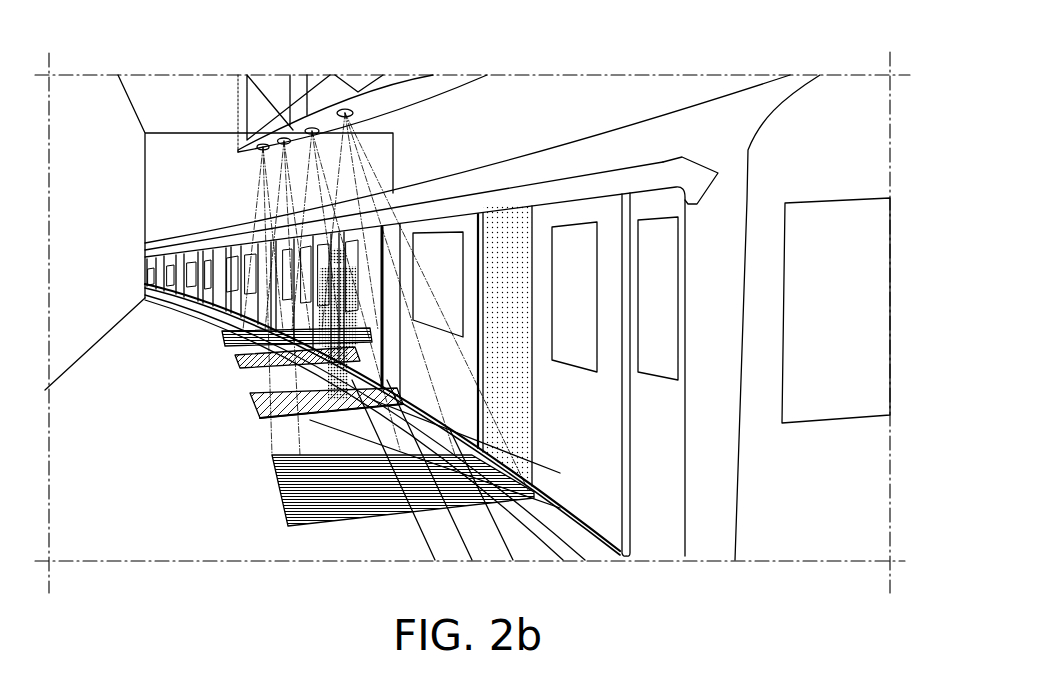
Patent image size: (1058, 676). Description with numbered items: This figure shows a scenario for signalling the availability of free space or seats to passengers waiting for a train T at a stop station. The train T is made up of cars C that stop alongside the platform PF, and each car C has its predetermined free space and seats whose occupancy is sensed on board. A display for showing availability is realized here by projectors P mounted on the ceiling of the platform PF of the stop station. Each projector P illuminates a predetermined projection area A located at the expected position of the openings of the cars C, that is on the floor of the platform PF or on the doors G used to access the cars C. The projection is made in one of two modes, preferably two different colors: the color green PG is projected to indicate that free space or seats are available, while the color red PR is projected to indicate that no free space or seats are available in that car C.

The passenger transport train T is at (196, 231).
The car C is at (701, 126).
The projector P is at (375, 118).
The color red PR is at (332, 588).
The color green PG is at (238, 355).
The projection area A is at (280, 513).
The platform PF is at (116, 492).
The doors G is at (611, 463).